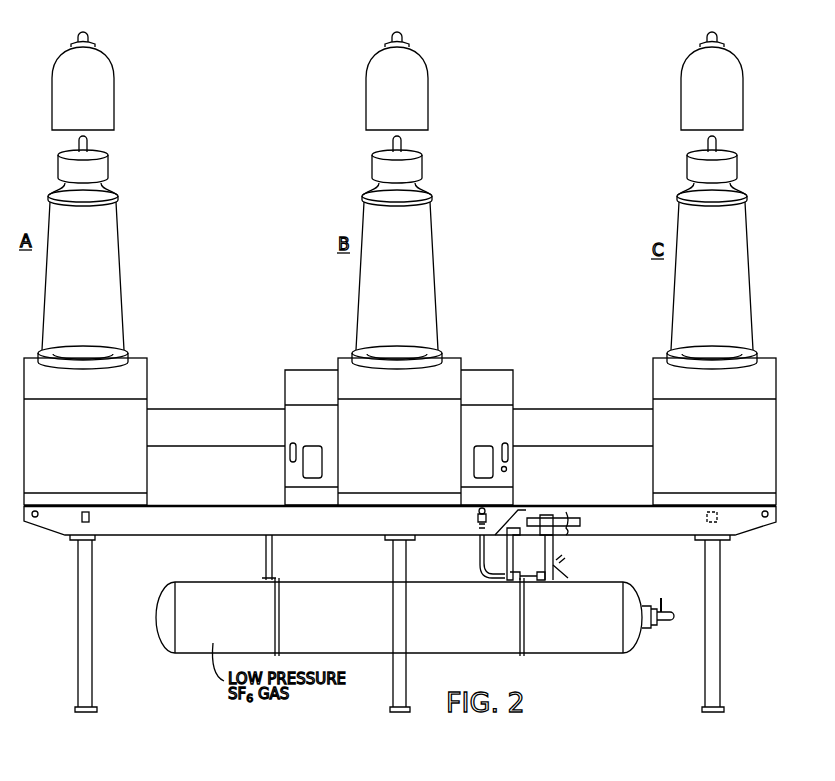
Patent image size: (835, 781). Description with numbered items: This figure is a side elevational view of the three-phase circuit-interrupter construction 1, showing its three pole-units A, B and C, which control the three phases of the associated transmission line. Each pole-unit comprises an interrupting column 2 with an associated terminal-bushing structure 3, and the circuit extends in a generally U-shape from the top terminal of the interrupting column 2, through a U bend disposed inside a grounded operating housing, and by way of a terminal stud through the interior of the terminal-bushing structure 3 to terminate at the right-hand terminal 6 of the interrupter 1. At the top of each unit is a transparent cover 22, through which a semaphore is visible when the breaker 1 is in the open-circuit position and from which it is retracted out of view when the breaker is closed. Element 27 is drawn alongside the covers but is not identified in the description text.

The three-phase circuit-interrupter construction 1 is at (536, 77).
The interrupting column 2 is at (421, 88).
The terminal-bushing structure 3 is at (89, 259).
The right-hand terminal 6 is at (88, 141).
The transparent cover 22 is at (88, 38).
The bell cover 27 is at (115, 81).